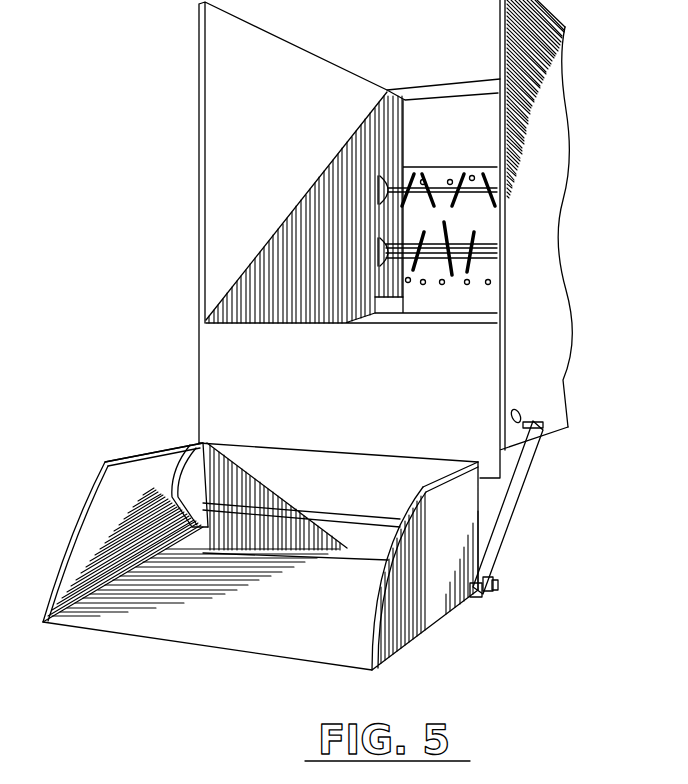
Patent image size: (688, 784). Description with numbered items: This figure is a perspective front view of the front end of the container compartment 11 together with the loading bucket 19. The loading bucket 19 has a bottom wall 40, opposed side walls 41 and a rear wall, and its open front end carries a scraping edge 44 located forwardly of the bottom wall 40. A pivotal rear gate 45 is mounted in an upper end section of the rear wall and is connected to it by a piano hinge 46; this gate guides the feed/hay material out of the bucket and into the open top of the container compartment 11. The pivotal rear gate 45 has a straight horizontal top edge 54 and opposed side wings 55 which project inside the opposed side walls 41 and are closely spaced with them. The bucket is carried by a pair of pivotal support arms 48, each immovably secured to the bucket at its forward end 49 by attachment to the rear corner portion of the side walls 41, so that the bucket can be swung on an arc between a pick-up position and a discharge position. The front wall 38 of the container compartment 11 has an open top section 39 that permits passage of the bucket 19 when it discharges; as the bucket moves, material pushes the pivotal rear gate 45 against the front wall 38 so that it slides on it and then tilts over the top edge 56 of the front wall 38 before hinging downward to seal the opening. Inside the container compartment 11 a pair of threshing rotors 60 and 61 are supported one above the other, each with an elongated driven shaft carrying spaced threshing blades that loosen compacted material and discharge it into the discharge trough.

The container compartment 11 is at (192, 270).
The loading bucket 19 is at (80, 476).
The front wall 38 is at (497, 355).
The open top section 39 is at (230, 202).
The bottom wall 40 is at (275, 645).
The side walls 41 is at (82, 523).
The scraping edge 44 is at (190, 647).
The pivotal rear gate 45 is at (340, 466).
The piano hinge 46 is at (257, 487).
The pivotal support arms 48 is at (513, 517).
The forward end 49 is at (497, 585).
The straight horizontal top edge 54 is at (440, 462).
The side wings 55 is at (190, 462).
The top edge 56 is at (475, 325).
The threshing rotor 60 is at (487, 250).
The threshing rotor 61 is at (487, 192).